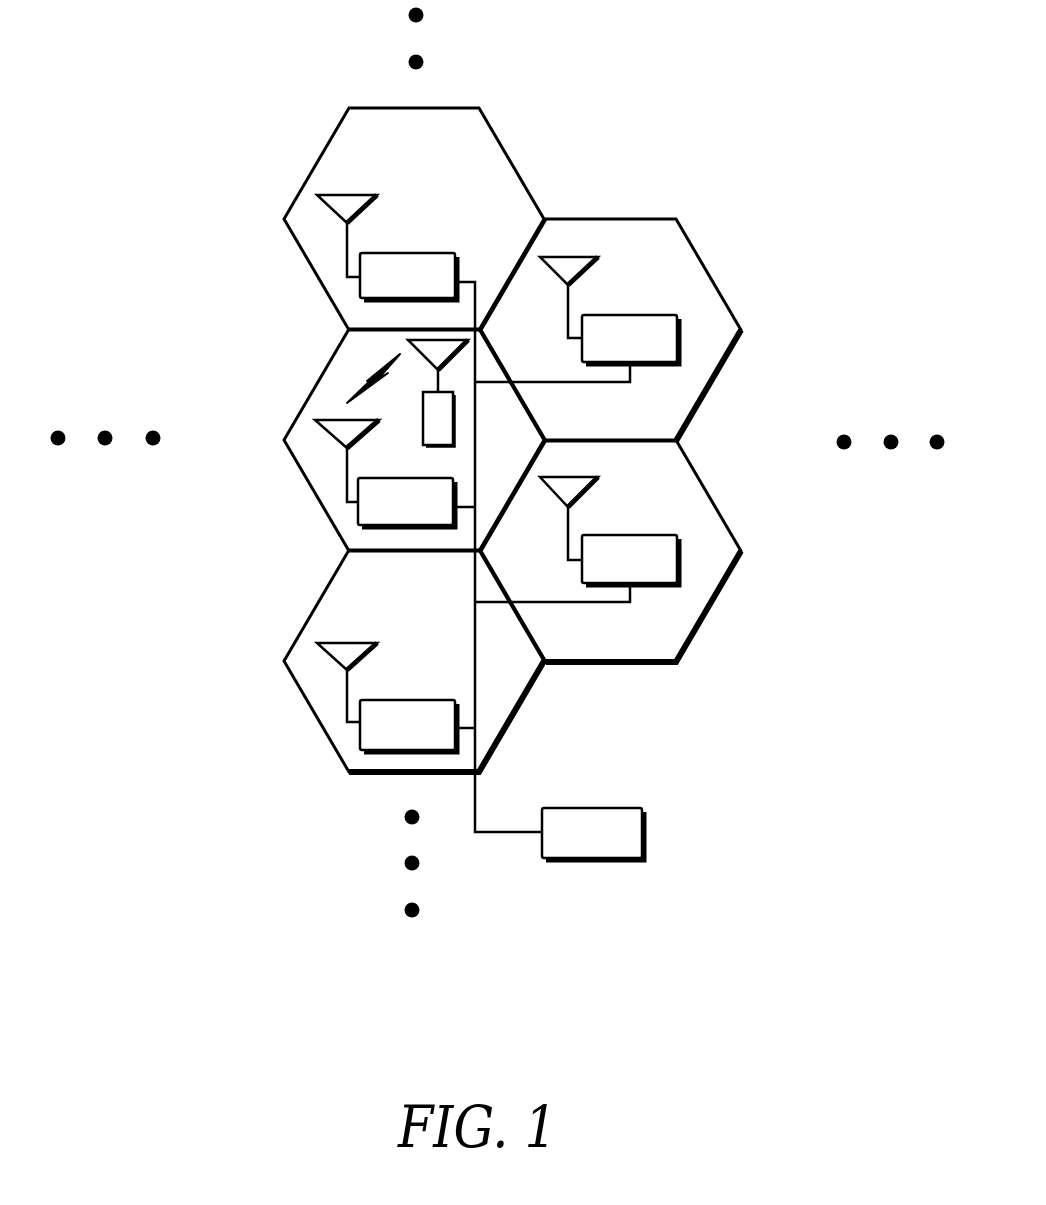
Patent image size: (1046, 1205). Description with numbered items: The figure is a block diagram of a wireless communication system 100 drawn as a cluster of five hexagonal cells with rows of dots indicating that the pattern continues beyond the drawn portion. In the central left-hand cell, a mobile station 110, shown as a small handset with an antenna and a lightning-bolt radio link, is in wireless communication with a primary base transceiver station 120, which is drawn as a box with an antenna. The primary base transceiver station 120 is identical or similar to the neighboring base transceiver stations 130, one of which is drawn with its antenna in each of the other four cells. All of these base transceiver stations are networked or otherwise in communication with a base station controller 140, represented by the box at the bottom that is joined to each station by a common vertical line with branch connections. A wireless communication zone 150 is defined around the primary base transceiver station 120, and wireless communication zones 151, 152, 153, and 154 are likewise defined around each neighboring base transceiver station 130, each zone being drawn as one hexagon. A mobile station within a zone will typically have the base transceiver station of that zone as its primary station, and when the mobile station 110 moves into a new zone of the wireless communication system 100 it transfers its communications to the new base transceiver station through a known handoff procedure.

The wireless communication system 100 is at (751, 146).
The mobile station 110 is at (423, 418).
The primary base transceiver station 120 is at (429, 521).
The neighboring base transceiver stations 130 is at (429, 293).
The base station controller 140 is at (612, 849).
The wireless communication zone 150 is at (530, 452).
The wireless communication zone 151 is at (460, 617).
The wireless communication zone 152 is at (660, 511).
The wireless communication zone 153 is at (657, 287).
The wireless communication zone 154 is at (462, 177).